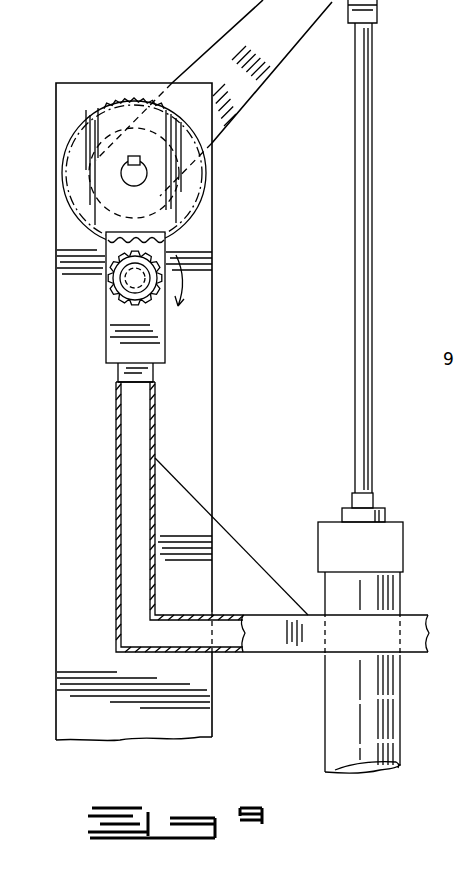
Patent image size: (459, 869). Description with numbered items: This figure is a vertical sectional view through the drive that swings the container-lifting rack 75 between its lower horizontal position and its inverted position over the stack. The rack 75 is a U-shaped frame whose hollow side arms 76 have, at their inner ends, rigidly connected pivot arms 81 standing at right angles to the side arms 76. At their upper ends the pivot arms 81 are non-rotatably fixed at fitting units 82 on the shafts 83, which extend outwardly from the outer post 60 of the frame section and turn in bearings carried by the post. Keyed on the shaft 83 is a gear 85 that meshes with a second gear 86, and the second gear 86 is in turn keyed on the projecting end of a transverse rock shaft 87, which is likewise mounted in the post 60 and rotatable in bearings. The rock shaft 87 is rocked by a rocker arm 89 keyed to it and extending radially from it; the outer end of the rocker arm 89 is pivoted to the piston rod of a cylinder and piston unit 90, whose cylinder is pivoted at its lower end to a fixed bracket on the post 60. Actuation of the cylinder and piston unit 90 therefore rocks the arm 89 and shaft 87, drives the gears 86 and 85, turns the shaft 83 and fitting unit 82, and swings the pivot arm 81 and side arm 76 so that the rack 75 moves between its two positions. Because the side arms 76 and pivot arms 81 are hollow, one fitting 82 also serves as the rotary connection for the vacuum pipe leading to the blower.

The outer post 60 is at (200, 377).
The rack 75 is at (424, 603).
The side arms 76 is at (263, 638).
The pivot arms 81 is at (114, 592).
The fitting units 82 is at (113, 336).
The shafts 83 is at (110, 280).
The gear 85 is at (155, 303).
The second gear 86 is at (120, 97).
The transverse rock shaft 87 is at (140, 166).
The rocker arm 89 is at (280, 48).
The cylinder and piston unit 90 is at (395, 745).